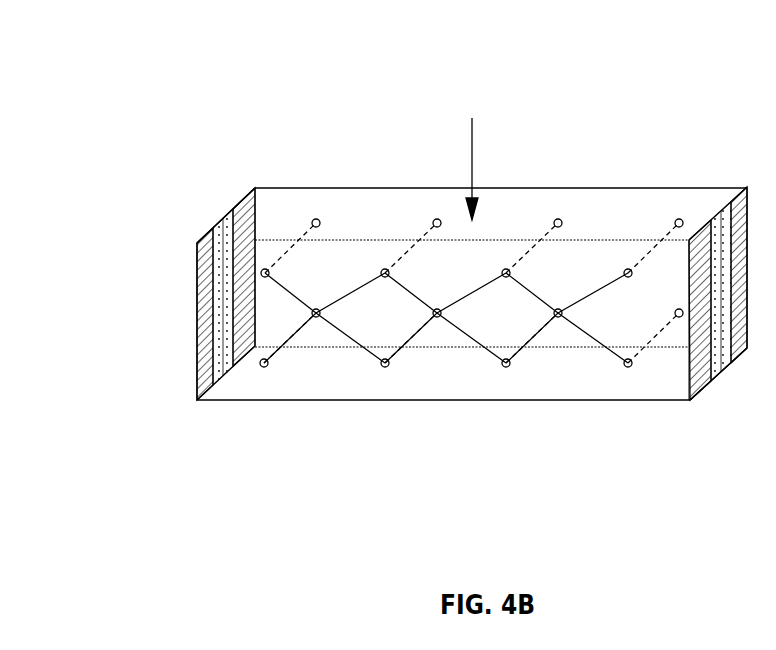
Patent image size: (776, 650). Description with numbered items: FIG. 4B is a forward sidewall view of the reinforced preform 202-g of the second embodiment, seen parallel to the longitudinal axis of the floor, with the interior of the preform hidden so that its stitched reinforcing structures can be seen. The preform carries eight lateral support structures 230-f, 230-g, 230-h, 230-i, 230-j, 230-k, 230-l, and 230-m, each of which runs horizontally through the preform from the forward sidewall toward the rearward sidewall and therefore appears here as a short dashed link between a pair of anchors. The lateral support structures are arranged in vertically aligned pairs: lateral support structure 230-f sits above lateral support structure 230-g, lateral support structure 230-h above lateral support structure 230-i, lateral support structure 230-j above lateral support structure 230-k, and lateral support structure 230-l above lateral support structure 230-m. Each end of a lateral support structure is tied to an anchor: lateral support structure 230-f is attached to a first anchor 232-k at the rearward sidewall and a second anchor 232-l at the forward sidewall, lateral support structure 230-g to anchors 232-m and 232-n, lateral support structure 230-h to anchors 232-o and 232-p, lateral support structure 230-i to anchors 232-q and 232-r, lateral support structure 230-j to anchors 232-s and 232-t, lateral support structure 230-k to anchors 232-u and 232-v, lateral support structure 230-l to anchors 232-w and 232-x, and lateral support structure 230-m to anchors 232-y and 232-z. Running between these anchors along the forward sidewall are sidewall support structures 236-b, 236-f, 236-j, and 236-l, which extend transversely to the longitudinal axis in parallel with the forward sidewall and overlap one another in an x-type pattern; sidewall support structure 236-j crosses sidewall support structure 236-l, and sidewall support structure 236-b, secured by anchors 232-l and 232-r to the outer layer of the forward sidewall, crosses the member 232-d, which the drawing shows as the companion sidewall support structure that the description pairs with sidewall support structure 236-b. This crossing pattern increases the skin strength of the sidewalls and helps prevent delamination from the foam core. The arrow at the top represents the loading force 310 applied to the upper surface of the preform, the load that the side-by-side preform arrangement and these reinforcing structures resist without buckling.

The reinforced preform 202-g is at (657, 110).
The loading force 310 is at (473, 133).
The sidewall support structure 236-l is at (372, 352).
The sidewall support structure 236-j is at (372, 280).
The sidewall support structure 236-f is at (470, 296).
The sidewall support structure 236-b is at (617, 281).
The strut 232-d is at (617, 353).
The lateral support structure 230-l is at (300, 232).
The lateral support structure 230-j is at (417, 235).
The lateral support structure 230-h is at (537, 235).
The lateral support structure 230-f is at (663, 235).
The lateral support structure 230-m is at (290, 346).
The lateral support structure 230-k is at (412, 350).
The lateral support structure 230-i is at (533, 347).
The lateral support structure 230-g is at (657, 347).
The anchor 232-x is at (262, 269).
The anchor 232-w is at (319, 219).
The anchor 232-s is at (439, 219).
The anchor 232-o is at (560, 219).
The first anchor 232-k is at (680, 219).
The anchor 232-t is at (383, 269).
The anchor 232-p is at (504, 268).
The second anchor 232-l is at (626, 269).
The anchor 232-y is at (319, 317).
The anchor 232-u is at (439, 317).
The anchor 232-q is at (560, 317).
The anchor 232-m is at (681, 317).
The anchor 232-z is at (266, 367).
The anchor 232-v is at (387, 367).
The anchor 232-r is at (508, 367).
The anchor 232-n is at (630, 367).